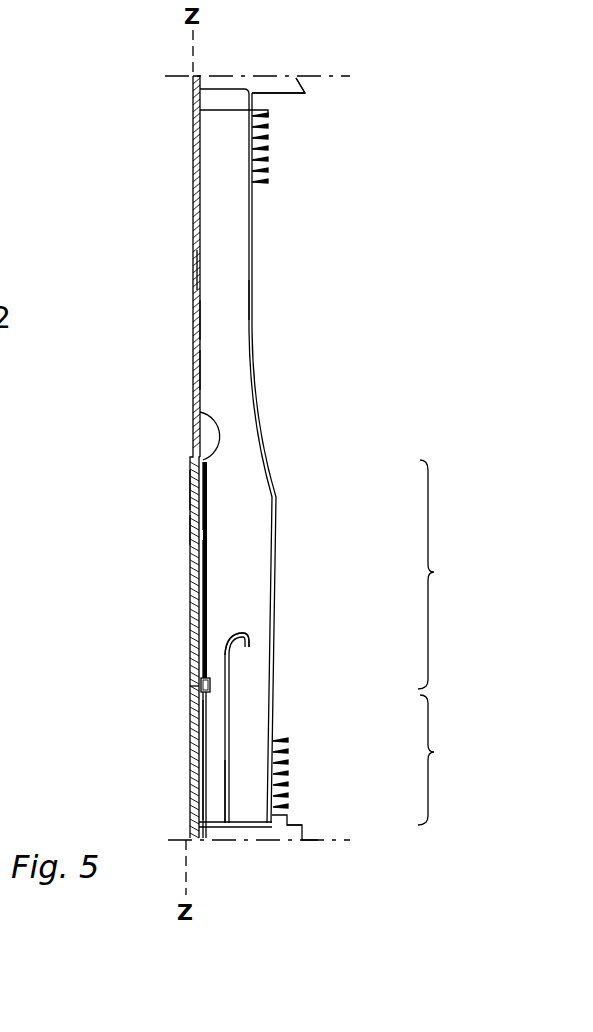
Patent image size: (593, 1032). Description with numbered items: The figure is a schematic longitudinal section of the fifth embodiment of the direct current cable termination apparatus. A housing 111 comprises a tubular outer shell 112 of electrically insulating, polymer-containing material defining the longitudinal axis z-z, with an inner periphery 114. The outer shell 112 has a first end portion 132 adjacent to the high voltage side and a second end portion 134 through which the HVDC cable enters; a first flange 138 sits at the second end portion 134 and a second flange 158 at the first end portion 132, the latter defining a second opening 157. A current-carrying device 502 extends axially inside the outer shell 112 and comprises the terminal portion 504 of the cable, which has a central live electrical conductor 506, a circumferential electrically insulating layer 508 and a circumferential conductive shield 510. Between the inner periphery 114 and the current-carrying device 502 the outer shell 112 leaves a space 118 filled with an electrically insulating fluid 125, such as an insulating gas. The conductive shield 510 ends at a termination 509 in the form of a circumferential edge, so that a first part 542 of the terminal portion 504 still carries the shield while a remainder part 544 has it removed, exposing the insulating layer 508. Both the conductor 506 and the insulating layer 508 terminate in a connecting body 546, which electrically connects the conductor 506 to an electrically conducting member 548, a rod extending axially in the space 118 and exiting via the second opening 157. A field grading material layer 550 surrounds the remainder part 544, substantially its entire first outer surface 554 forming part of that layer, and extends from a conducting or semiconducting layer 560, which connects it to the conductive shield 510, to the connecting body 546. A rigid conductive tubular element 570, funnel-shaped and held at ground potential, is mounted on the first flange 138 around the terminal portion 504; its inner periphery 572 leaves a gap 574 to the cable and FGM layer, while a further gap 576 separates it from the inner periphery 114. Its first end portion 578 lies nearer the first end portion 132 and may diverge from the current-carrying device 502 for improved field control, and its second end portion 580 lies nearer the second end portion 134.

The housing 111 is at (255, 300).
The tubular outer shell 112 is at (253, 232).
The inner periphery 114 is at (247, 165).
The space 118 is at (229, 208).
The electrically insulating fluid 125 is at (243, 330).
The first end portion 132 is at (294, 109).
The second end portion 134 is at (320, 828).
The first flange 138 is at (283, 841).
The second opening 157 is at (202, 79).
The second flange 158 is at (289, 80).
The current-carrying device 502 is at (210, 368).
The terminal portion 504 is at (209, 533).
The central live electrical conductor 506 is at (193, 488).
The electrically insulating layer 508 is at (202, 525).
The termination 509 is at (197, 690).
The circumferential conductive shield 510 is at (205, 730).
The first part 542 is at (452, 760).
The remainder part 544 is at (452, 574).
The connecting body 546 is at (208, 433).
The electrically conducting member 548 is at (197, 268).
The field grading material layer 550 is at (207, 568).
The first outer surface 554 is at (210, 498).
The conducting or semiconducting layer 560 is at (200, 684).
The rigid conductive tubular element 570 is at (229, 700).
The inner periphery 572 is at (222, 688).
The gap 574 is at (210, 762).
The gap 576 is at (248, 745).
The first end portion 578 is at (250, 627).
The second end portion 580 is at (233, 808).